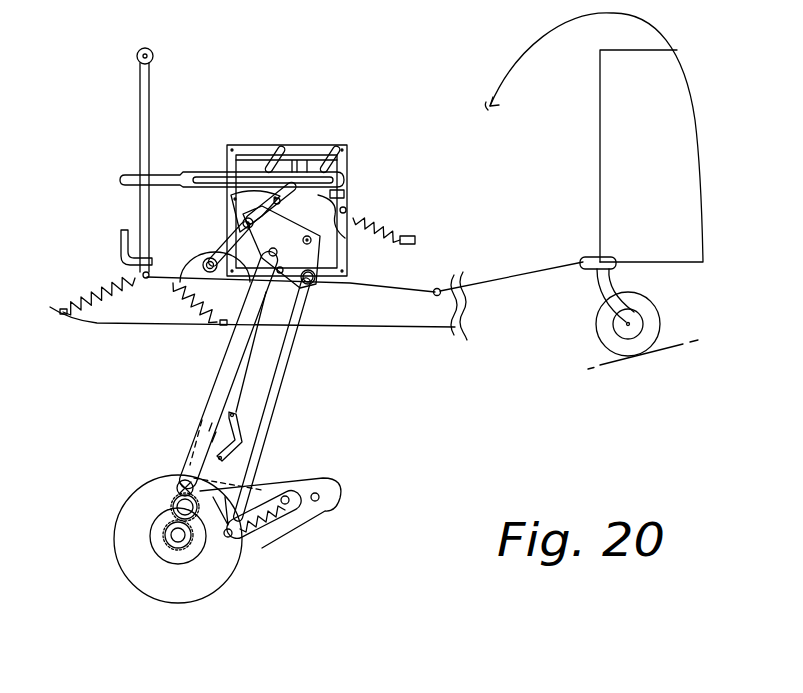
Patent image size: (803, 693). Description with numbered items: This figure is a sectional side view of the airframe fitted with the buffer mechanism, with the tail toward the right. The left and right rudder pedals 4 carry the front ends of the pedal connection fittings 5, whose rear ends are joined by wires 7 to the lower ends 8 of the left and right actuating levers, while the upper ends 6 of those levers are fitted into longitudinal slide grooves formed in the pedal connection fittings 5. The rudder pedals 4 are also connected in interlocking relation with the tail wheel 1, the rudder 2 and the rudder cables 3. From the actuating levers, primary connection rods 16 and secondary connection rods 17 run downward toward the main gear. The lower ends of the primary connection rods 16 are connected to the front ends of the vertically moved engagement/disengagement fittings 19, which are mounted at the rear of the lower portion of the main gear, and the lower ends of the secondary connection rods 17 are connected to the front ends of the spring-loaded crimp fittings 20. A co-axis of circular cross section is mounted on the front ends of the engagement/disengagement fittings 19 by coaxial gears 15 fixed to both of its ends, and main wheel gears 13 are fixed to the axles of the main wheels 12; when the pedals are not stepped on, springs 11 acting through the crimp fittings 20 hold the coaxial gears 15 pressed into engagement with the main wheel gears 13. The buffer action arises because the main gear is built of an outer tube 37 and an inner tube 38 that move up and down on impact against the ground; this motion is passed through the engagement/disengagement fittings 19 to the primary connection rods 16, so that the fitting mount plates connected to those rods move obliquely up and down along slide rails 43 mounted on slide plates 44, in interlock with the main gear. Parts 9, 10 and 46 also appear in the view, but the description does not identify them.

The tail wheel 1 is at (655, 321).
The rudder 2 is at (660, 153).
The rudder cables 3 is at (525, 280).
The rudder pedals 4 is at (122, 235).
The pedal connection fittings 5 is at (333, 182).
The upper ends of the actuating levers 6 is at (300, 157).
The wires 7 is at (238, 249).
The lower ends of the actuating levers 8 is at (173, 284).
The pivot link 9 is at (236, 212).
The pivot 10 is at (290, 292).
The springs 11 is at (100, 286).
The main wheels 12 is at (193, 592).
The main wheel gears 13 is at (192, 540).
The coaxial gears 15 is at (165, 495).
The primary connection rods 16 is at (232, 360).
The secondary connection rods 17 is at (277, 393).
The engagement/disengagement fittings 19 is at (327, 510).
The spring-loaded crimp fittings 20 is at (283, 533).
The outer tube 37 is at (253, 345).
The inner tube 38 is at (208, 434).
The slide rails 43 is at (330, 160).
The slide plates 44 is at (248, 152).
The bracket 46 is at (242, 437).